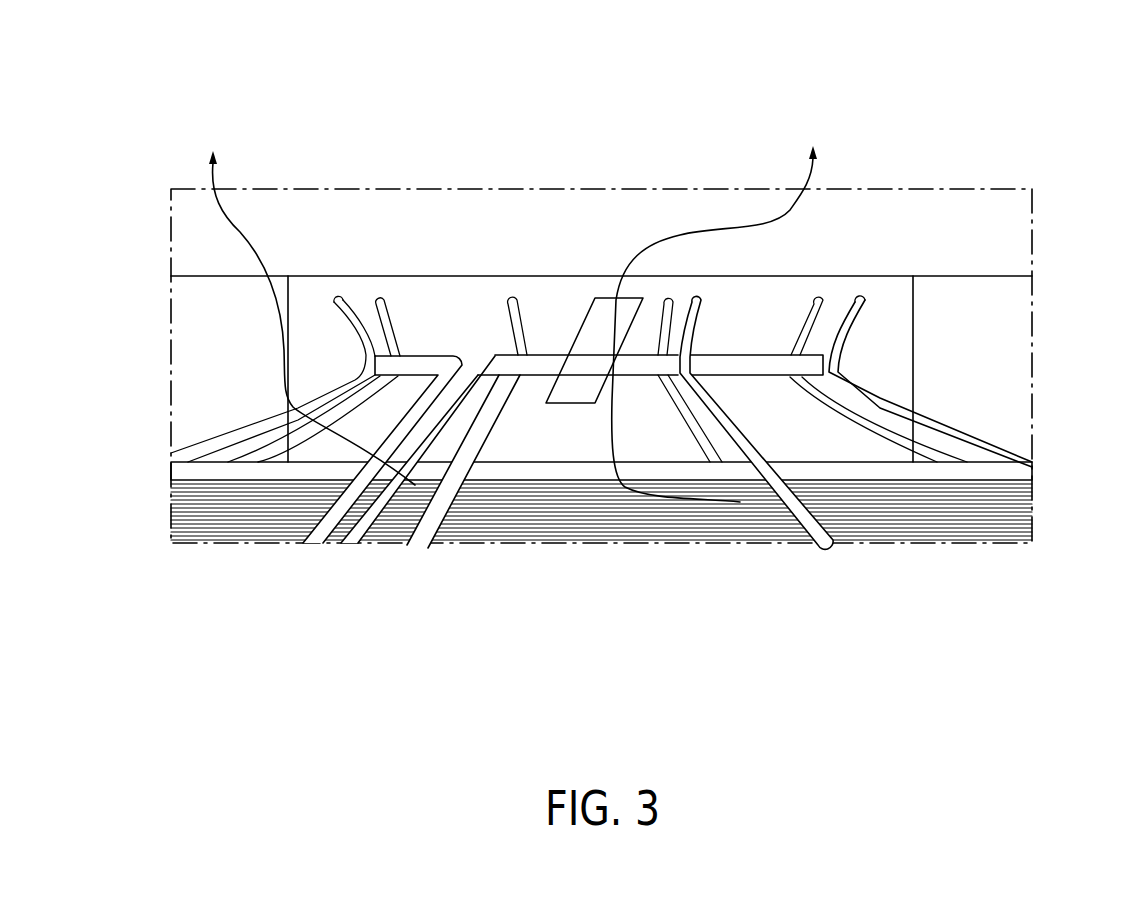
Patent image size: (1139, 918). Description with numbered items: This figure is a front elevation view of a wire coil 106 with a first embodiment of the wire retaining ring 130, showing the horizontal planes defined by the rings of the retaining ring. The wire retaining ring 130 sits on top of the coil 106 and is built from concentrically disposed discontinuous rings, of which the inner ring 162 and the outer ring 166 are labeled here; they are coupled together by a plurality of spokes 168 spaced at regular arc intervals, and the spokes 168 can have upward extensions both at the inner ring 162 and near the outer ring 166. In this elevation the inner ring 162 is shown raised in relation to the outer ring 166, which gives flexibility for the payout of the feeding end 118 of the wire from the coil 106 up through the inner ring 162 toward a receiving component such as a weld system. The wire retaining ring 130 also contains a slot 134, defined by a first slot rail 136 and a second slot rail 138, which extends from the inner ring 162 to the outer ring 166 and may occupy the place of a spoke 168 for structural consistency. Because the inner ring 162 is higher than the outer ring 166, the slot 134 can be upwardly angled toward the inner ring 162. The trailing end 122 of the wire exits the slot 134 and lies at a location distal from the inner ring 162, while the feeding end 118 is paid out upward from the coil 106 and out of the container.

The wire retaining ring 130 is at (121, 114).
The trailing end 122 is at (237, 230).
The feeding end 118 is at (807, 177).
The spokes 168 is at (743, 437).
The inner ring 162 is at (535, 368).
The first slot rail 136 is at (465, 403).
The slot 134 is at (419, 447).
The second slot rail 138 is at (445, 507).
The outer ring 166 is at (703, 470).
The coil 106 is at (978, 520).